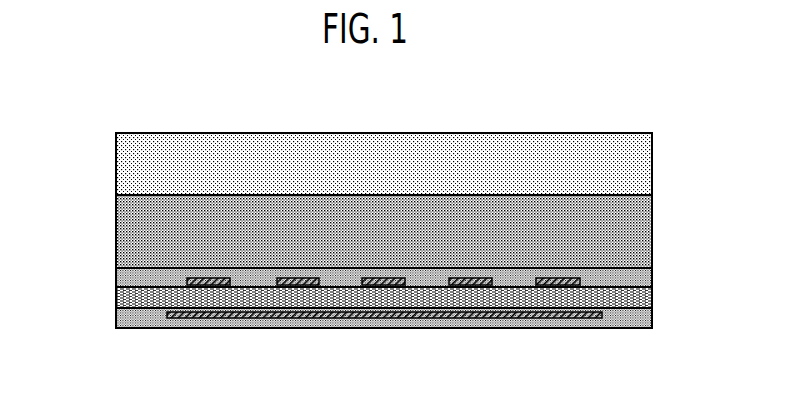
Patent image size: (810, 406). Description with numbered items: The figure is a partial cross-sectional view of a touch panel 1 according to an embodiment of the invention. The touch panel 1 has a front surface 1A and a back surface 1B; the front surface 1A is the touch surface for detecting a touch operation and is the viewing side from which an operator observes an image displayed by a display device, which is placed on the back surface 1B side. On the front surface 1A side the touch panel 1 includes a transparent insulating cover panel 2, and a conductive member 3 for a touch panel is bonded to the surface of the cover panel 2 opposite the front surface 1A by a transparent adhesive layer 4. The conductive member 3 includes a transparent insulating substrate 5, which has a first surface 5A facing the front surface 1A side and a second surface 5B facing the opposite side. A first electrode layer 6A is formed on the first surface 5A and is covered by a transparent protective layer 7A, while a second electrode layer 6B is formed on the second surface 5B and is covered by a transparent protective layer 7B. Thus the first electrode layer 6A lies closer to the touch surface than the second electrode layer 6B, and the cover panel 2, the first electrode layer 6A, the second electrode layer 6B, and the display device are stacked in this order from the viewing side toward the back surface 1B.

The touch panel 1 is at (380, 233).
The front surface 1A is at (457, 133).
The back surface 1B is at (428, 328).
The cover panel 2 is at (647, 161).
The conductive member for a touch panel 3 is at (380, 234).
The transparent adhesive layer 4 is at (645, 232).
The transparent insulating substrate 5 is at (120, 296).
The first surface 5A is at (143, 288).
The second surface 5B is at (142, 308).
The first electrode layer 6A is at (212, 279).
The second electrode layer 6B is at (222, 314).
The transparent protective layer 7A is at (120, 278).
The transparent protective layer 7B is at (120, 320).